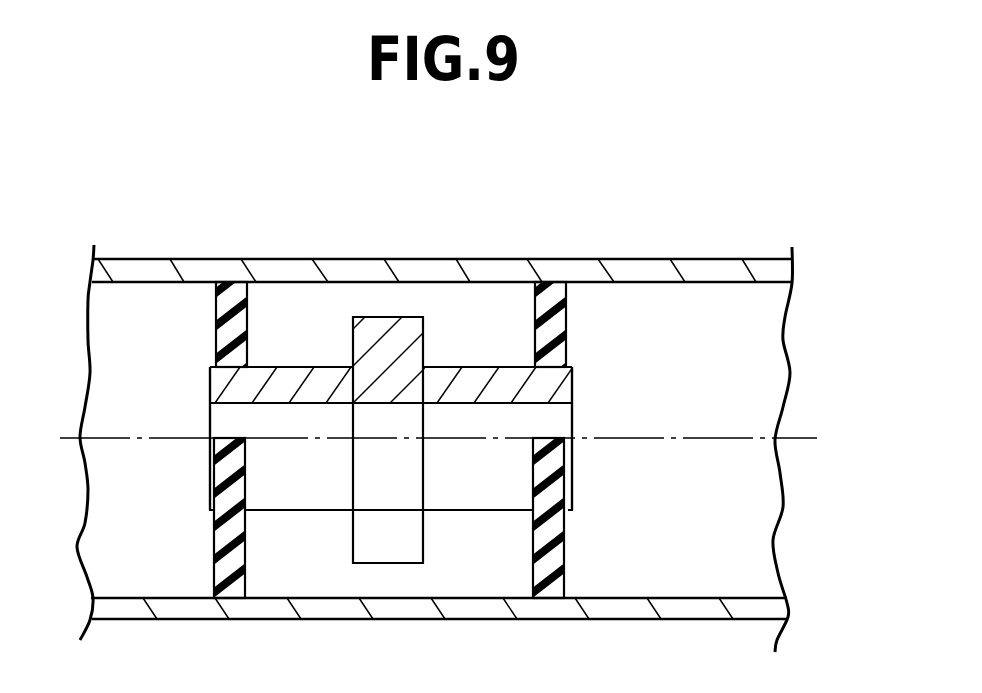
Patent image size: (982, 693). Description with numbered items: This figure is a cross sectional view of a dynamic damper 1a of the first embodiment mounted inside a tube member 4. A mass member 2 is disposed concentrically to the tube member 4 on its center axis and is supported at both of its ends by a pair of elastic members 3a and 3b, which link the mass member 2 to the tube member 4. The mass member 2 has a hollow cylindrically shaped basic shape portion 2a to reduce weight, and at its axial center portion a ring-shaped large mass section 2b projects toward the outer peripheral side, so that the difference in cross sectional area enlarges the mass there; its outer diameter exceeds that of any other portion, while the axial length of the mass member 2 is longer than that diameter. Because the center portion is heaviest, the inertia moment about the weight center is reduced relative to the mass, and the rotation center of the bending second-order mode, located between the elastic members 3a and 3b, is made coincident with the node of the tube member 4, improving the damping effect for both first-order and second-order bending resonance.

The dynamic damper 1a is at (397, 318).
The mass member 2 is at (576, 382).
The basic shape portion 2a is at (208, 373).
The large mass section 2b is at (425, 350).
The elastic member 3a is at (230, 335).
The elastic member 3b is at (567, 317).
The tube member 4 is at (643, 277).